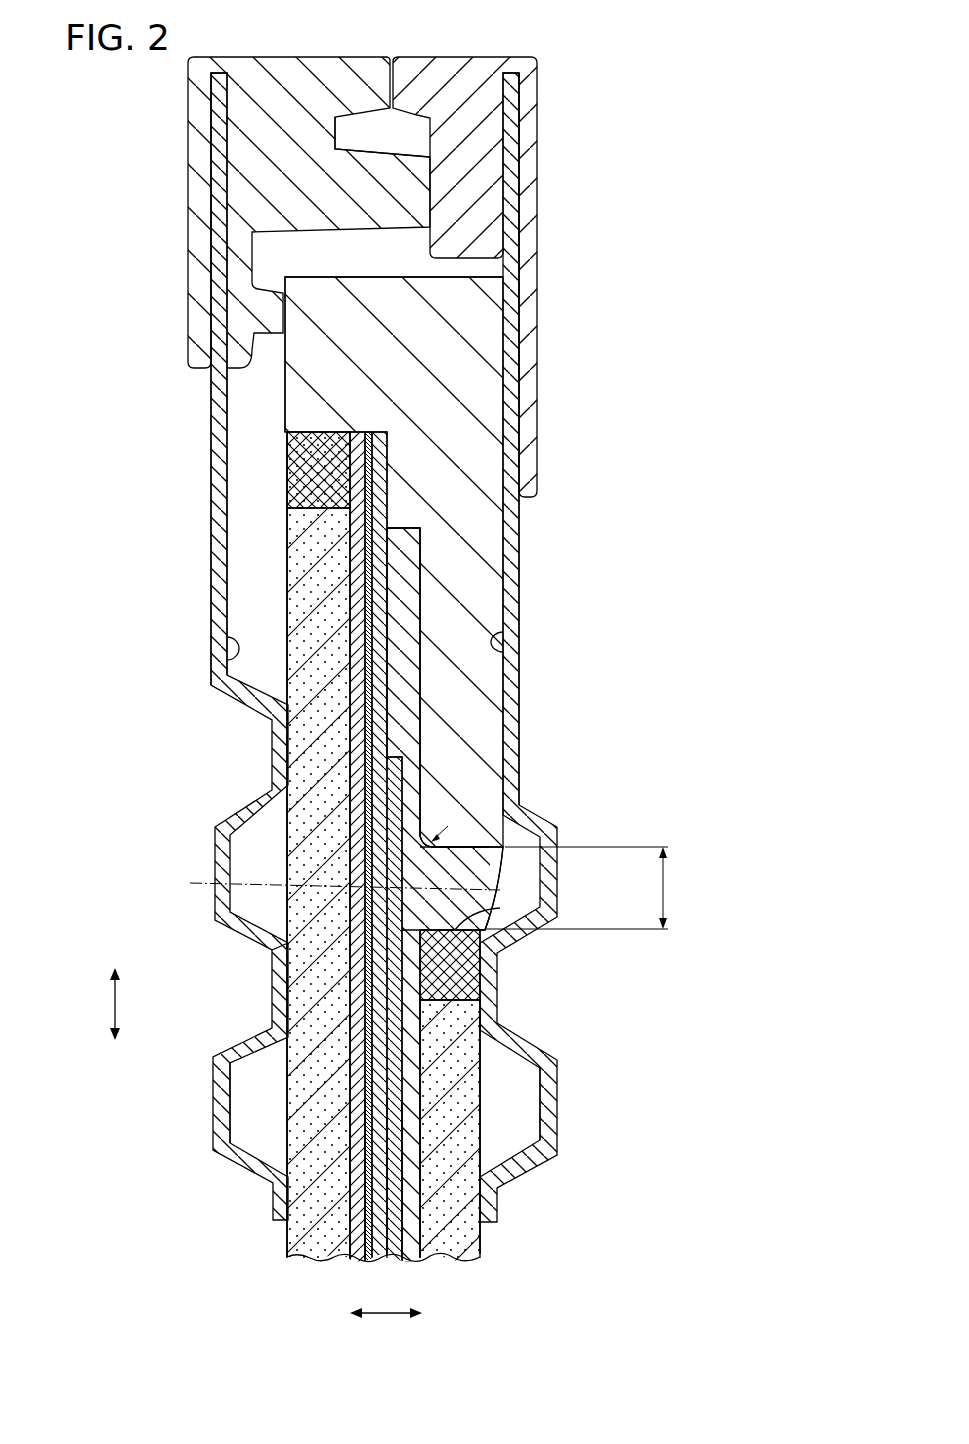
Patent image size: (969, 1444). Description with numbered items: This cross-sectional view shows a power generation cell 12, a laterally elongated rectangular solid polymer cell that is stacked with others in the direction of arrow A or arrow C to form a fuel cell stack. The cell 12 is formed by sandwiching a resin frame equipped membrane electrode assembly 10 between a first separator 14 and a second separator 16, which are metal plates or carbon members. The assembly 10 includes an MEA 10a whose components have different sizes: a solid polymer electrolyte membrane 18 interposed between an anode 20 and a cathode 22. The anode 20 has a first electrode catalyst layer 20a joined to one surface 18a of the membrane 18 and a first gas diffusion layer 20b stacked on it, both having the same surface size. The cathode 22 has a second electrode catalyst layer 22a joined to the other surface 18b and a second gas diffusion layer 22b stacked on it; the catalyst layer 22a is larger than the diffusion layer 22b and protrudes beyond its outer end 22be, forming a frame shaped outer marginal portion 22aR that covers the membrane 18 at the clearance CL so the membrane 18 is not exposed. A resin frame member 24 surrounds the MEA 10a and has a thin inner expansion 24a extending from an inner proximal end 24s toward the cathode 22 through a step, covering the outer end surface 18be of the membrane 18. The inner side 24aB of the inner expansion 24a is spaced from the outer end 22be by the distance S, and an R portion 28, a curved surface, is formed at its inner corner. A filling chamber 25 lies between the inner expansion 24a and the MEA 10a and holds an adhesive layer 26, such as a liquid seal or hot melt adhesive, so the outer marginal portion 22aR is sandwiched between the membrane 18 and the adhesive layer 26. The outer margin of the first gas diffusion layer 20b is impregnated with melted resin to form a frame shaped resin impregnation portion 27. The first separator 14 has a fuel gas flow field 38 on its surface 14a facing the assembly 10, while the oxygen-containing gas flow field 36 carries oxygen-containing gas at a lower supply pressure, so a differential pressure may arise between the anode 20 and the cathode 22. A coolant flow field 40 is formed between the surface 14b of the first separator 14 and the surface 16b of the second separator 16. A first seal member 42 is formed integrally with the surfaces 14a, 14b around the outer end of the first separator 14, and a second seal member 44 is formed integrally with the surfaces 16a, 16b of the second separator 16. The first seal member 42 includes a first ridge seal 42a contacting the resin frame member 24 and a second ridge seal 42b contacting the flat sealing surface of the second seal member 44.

The resin frame equipped membrane electrode assembly 10 is at (388, 830).
The MEA 10a is at (480, 1060).
The power generation cell 12 is at (531, 49).
The first separator 14 is at (175, 646).
The surface of first separator 14a is at (236, 648).
The surface of first separator 14b is at (212, 600).
The second separator 16 is at (549, 647).
The surface of second separator 16a is at (500, 645).
The surface of second separator 16b is at (520, 603).
The solid polymer electrolyte membrane 18 is at (391, 852).
The one surface of solid polymer electrolyte membrane 18a is at (292, 968).
The surface of solid polymer electrolyte membrane 18b is at (483, 998).
The outer end surface of solid polymer electrolyte membrane 18be is at (400, 585).
The anode 20 is at (236, 852).
The first electrode catalyst layer 20a is at (239, 852).
The first gas diffusion layer 20b is at (259, 852).
The cathode 22 is at (399, 1090).
The second electrode catalyst layer 22a is at (483, 1127).
The frame shaped outer marginal portion 22aR is at (283, 922).
The second gas diffusion layer 22b is at (506, 1094).
The outer end of second gas diffusion layer 22be is at (487, 924).
The resin frame member 24 is at (399, 643).
The inner expansion 24a is at (483, 724).
The inner side of inner expansion 24aB is at (495, 882).
The inner proximal end 24s is at (300, 466).
The filling chamber 25 is at (418, 572).
The adhesive layer 26 is at (415, 676).
The resin impregnation portion 27 is at (300, 483).
The curved surface 28 is at (488, 910).
The oxygen-containing gas flow field 36 is at (510, 1087).
The fuel gas flow field 38 is at (243, 1078).
The coolant flow field 40 is at (245, 737).
The first seal member 42 is at (354, 212).
The first ridge seal 42a is at (275, 318).
The second ridge seal 42b is at (405, 193).
The second seal member 44 is at (540, 100).